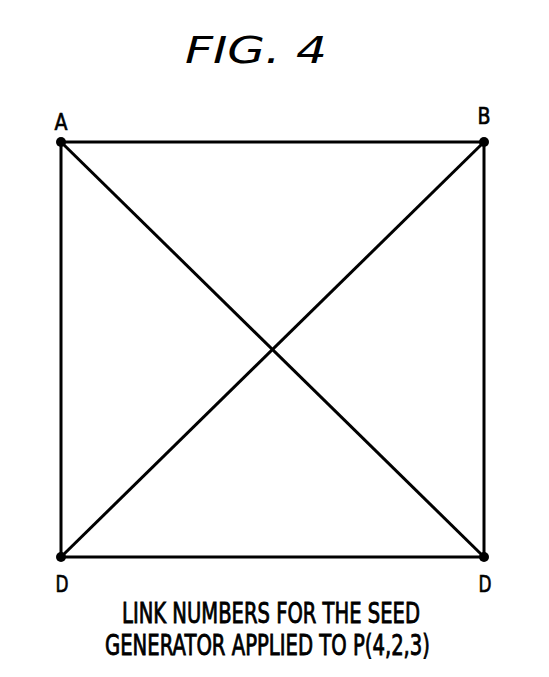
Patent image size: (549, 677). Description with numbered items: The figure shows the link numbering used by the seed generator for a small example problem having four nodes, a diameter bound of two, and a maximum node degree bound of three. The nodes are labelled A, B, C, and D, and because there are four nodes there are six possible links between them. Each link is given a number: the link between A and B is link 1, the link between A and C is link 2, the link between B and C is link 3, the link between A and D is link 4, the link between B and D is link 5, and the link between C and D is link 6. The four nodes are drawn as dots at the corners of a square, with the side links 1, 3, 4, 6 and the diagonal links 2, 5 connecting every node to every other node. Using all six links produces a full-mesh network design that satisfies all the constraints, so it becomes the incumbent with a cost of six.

The link (A, B) 1 is at (272, 125).
The link (A, C) 2 is at (272, 349).
The link (B, C) 3 is at (494, 349).
The link (A, D) 4 is at (51, 349).
The link (B, D) 5 is at (272, 349).
The link (C, D) 6 is at (272, 576).